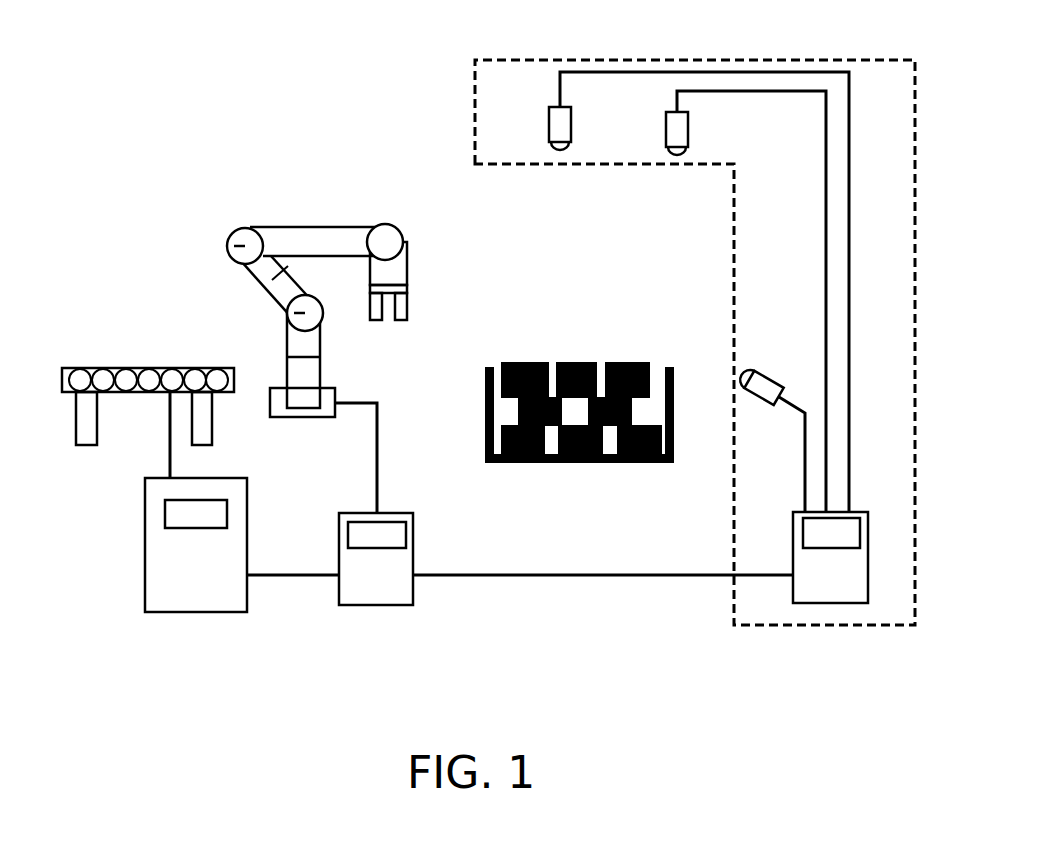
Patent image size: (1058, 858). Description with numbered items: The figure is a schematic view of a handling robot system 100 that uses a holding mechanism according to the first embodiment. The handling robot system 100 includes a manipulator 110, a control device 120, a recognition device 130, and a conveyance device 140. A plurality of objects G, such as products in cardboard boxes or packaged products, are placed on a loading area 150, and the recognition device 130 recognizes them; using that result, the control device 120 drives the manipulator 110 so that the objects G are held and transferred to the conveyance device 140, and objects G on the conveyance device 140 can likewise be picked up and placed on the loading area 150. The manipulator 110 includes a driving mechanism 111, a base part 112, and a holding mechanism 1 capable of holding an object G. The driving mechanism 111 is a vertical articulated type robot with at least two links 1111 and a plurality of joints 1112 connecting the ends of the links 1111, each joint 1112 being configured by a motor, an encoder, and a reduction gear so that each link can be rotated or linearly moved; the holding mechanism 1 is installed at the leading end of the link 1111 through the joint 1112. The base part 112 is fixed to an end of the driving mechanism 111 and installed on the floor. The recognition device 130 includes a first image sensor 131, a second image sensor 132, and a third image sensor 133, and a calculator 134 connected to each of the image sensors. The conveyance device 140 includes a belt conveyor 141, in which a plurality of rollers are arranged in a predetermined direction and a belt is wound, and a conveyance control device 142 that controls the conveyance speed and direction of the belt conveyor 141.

The handling robot system 100 is at (176, 111).
The manipulator 110 is at (246, 204).
The driving mechanism 111 is at (384, 203).
The link 1111 is at (282, 272).
The joint 1112 is at (273, 302).
The base part 112 is at (270, 397).
The holding mechanism 1 is at (407, 287).
The control device 120 is at (397, 568).
The recognition device 130 is at (712, 165).
The first image sensor 131 is at (558, 125).
The second image sensor 132 is at (676, 130).
The third image sensor 133 is at (765, 385).
The calculator 134 is at (810, 557).
The conveyance device 140 is at (78, 322).
The belt conveyor 141 is at (112, 372).
The conveyance control device 142 is at (175, 553).
The loading area 150 is at (487, 387).
The object G is at (601, 365).